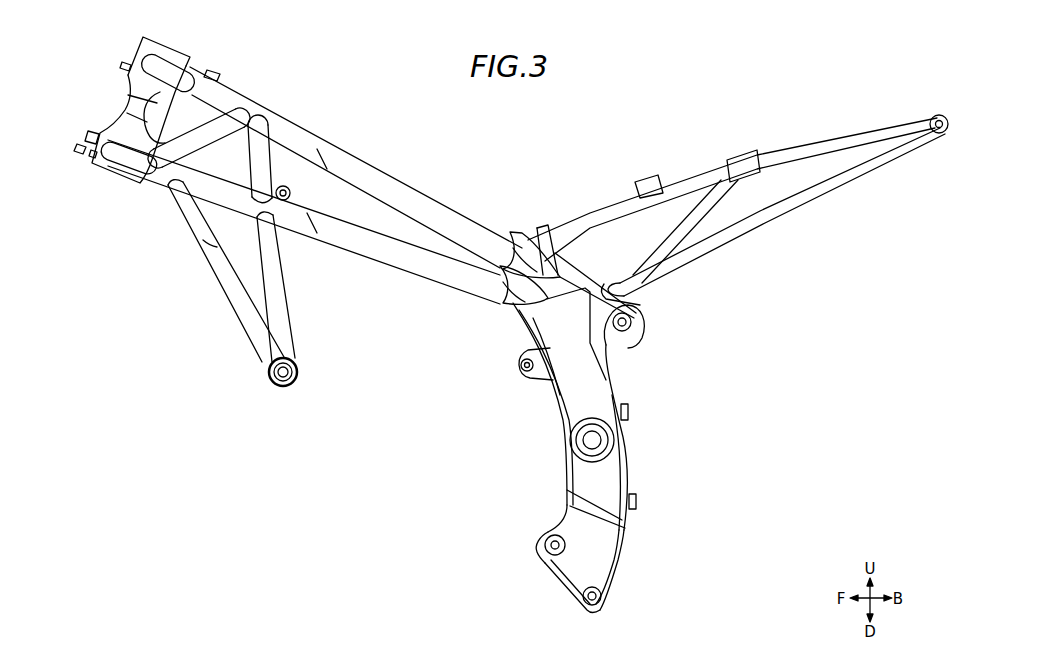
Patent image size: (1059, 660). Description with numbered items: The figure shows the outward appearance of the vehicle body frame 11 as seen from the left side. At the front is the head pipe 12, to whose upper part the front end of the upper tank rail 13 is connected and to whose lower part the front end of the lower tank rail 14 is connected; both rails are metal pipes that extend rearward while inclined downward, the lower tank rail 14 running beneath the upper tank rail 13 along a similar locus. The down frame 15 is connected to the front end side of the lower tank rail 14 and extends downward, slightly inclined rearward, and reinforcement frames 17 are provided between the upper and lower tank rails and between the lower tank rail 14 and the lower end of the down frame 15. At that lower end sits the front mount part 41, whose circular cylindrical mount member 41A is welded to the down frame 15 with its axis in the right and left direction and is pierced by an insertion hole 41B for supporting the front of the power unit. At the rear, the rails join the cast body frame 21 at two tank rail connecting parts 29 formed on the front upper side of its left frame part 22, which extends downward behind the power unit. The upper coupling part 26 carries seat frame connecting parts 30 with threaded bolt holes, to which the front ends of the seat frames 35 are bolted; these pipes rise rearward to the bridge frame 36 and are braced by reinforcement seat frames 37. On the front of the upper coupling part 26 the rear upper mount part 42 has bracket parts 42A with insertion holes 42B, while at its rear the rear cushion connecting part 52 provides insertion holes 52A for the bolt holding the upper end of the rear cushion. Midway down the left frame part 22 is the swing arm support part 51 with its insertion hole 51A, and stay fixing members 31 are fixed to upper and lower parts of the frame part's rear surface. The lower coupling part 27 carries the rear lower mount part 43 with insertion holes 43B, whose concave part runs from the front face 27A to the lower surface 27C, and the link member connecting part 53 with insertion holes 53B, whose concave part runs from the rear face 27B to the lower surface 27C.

The vehicle body frame 11 is at (425, 90).
The head pipe 12 is at (128, 104).
The upper tank rail 13 is at (343, 152).
The lower tank rail 14 is at (353, 247).
The down frame 15 is at (217, 267).
The reinforcement frame 17 is at (193, 137).
The body frame 21 is at (581, 472).
The left frame part 22 is at (577, 405).
The upper coupling part 26 is at (583, 277).
The lower coupling part 27 is at (576, 569).
The front face 27A is at (558, 522).
The rear face 27B is at (615, 582).
The lower surface 27C is at (556, 583).
The tank rail connecting part 29 is at (513, 260).
The seat frame connecting part 30 is at (522, 239).
The stay fixing member 31 is at (629, 409).
The seat frame 35 is at (688, 178).
The bridge frame 36 is at (940, 115).
The reinforcement seat frame 37 is at (790, 178).
The front mount part 41 is at (276, 393).
The mount member 41A is at (294, 381).
The insertion hole 41B is at (275, 377).
The rear upper mount part 42 is at (505, 360).
The bracket part 42A is at (513, 346).
The insertion hole 42B is at (520, 368).
The rear lower mount part 43 is at (527, 545).
The insertion hole 43B is at (545, 547).
The swing arm support part 51 is at (566, 442).
The insertion hole 51A is at (593, 443).
The rear cushion connecting part 52 is at (640, 325).
The insertion hole 52A is at (627, 326).
The link member connecting part 53 is at (608, 615).
The insertion hole 53B is at (606, 603).